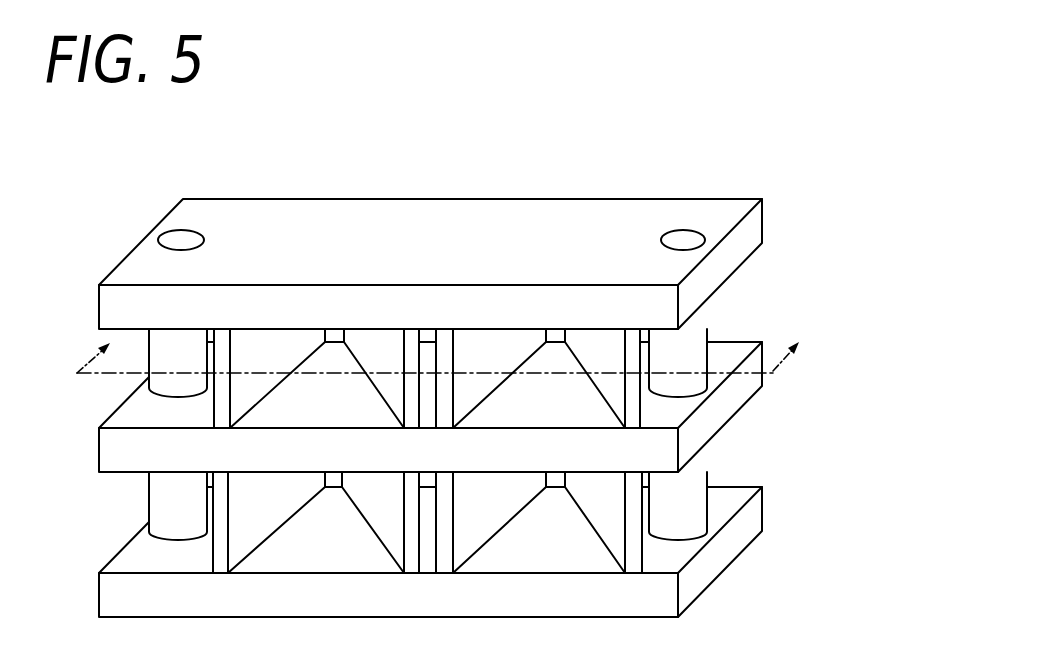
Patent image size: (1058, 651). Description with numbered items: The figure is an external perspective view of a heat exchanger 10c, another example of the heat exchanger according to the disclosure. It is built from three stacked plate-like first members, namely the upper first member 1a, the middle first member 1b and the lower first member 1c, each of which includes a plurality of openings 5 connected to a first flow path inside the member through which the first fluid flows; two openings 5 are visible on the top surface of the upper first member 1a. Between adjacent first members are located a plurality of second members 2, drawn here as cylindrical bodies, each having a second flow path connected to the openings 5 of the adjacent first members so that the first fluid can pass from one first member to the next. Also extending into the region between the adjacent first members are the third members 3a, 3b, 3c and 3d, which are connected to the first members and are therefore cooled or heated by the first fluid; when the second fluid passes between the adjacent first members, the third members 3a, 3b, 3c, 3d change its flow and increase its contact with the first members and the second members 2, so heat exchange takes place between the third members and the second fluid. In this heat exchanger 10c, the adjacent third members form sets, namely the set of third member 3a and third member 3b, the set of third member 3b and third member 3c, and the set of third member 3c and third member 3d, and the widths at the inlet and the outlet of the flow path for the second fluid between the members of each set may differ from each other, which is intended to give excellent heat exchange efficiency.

The heat exchanger 10c is at (208, 182).
The upper first member 1a is at (732, 250).
The middle first member 1b is at (718, 410).
The lower first member 1c is at (722, 543).
The second member 2 is at (175, 490).
The third member 3a is at (220, 357).
The third member 3b is at (413, 358).
The third member 3c is at (445, 358).
The third member 3d is at (630, 355).
The opening 5 is at (177, 240).